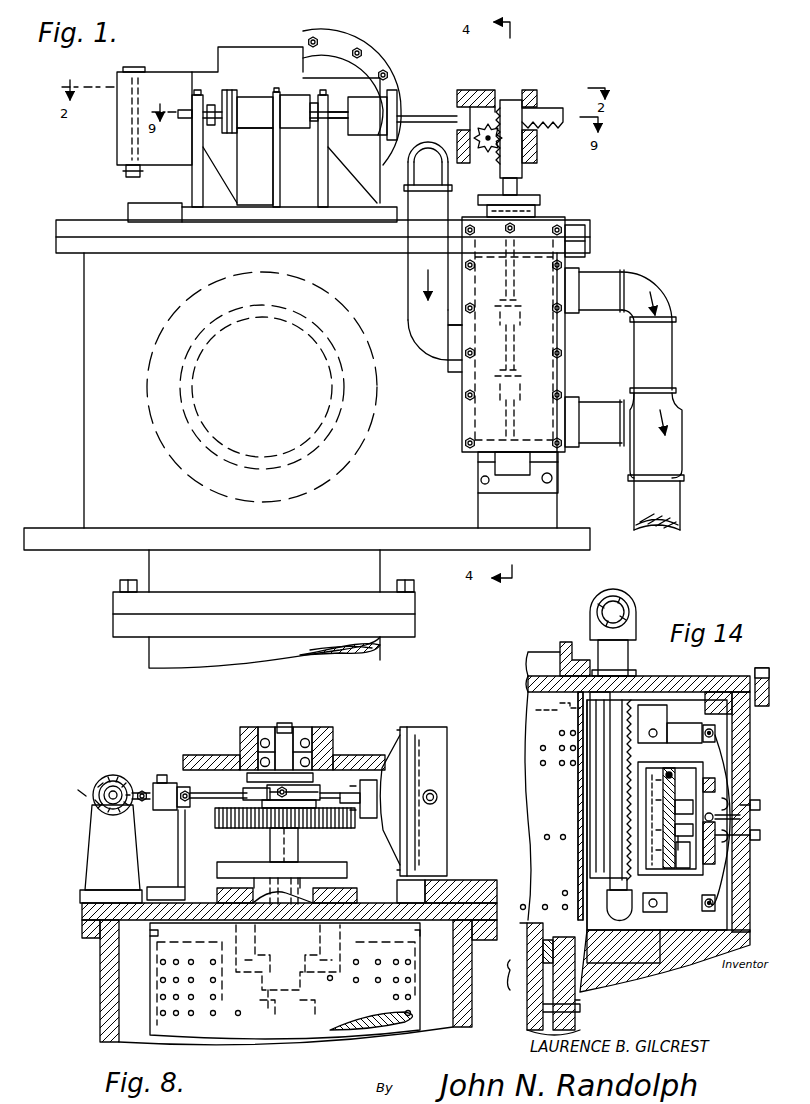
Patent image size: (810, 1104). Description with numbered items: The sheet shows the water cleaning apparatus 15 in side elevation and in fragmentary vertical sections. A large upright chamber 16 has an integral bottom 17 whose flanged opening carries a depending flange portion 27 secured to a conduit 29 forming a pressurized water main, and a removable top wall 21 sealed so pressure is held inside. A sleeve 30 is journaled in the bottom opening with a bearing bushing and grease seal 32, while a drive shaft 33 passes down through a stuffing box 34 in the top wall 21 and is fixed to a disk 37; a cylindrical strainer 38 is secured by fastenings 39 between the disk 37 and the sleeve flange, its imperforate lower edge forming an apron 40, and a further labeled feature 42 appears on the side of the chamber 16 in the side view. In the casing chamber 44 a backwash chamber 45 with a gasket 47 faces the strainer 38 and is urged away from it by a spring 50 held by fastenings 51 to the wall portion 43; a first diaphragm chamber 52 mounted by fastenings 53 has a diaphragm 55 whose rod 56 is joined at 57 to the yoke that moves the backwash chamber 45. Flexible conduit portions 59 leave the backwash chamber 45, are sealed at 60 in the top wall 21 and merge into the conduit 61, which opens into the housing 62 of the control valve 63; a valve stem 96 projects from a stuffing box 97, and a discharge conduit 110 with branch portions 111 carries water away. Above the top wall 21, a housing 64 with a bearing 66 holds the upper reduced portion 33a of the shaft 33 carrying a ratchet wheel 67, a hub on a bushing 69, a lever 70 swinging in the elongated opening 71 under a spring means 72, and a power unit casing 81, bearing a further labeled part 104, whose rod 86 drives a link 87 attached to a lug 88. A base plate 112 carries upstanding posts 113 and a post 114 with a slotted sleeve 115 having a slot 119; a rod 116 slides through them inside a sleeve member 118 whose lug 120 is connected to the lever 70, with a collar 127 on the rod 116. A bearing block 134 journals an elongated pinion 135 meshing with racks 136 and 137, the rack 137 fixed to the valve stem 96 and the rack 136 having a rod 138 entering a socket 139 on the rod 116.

In FIG. 1, the water cleaning apparatus 15 is at (578, 205).
In FIG. 1, the chamber 16 is at (84, 318).
In FIG. 8, the chamber 16 is at (58, 987).
In FIG. 1, the bottom 17 is at (307, 539).
In FIG. 1, the top wall 21 is at (78, 226).
In FIG. 8, the top wall 21 is at (448, 888).
In FIG. 14, the top wall 21 is at (636, 680).
In FIG. 1, the depending flange portion 27 is at (264, 593).
In FIG. 1, the conduit 29 is at (380, 656).
In FIG. 14, the sleeve 30 is at (527, 980).
In FIG. 14, the bearing bushing and grease seal 32 is at (527, 1006).
In FIG. 8, the drive shaft 33 is at (284, 866).
In FIG. 8, the upper reduced portion of shaft 33a is at (274, 740).
In FIG. 8, the stuffing box 34 is at (306, 866).
In FIG. 14, the disk 37 is at (552, 806).
In FIG. 8, the strainer 38 is at (150, 1005).
In FIG. 14, the strainer 38 is at (580, 870).
In FIG. 8, the fastenings 39 is at (152, 935).
In FIG. 14, the apron 40 is at (582, 956).
In FIG. 1, the circular opening 42 is at (196, 408).
In FIG. 14, the wall portion 43 is at (748, 860).
In FIG. 14, the casing chamber 44 is at (740, 708).
In FIG. 14, the backwash chamber 45 is at (605, 807).
In FIG. 14, the gasket 47 is at (600, 850).
In FIG. 14, the spring 50 is at (742, 788).
In FIG. 14, the fastenings 51 is at (755, 838).
In FIG. 14, the first diaphragm chamber 52 is at (655, 775).
In FIG. 14, the fastenings 53 is at (662, 732).
In FIG. 14, the diaphragm 55 is at (678, 798).
In FIG. 14, the rod 56 is at (695, 804).
In FIG. 14, the connection 57 is at (690, 826).
In FIG. 14, the flexible conduit portions 59 is at (608, 780).
In FIG. 14, the seal 60 is at (628, 660).
In FIG. 1, the conduit 61 is at (433, 251).
In FIG. 14, the conduit 61 is at (630, 600).
In FIG. 1, the valve housing 62 is at (478, 415).
In FIG. 1, the control valve 63 is at (452, 383).
In FIG. 1, the housing 64 is at (192, 65).
In FIG. 8, the housing 64 is at (198, 760).
In FIG. 14, the housing 64 is at (575, 656).
In FIG. 8, the bearing 66 is at (322, 745).
In FIG. 8, the ratchet wheel 67 is at (222, 828).
In FIG. 8, the bushing 69 is at (250, 778).
In FIG. 8, the lever 70 is at (215, 792).
In FIG. 8, the elongated opening 71 is at (182, 843).
In FIG. 8, the spring means 72 is at (162, 776).
In FIG. 1, the power unit casing 81 is at (380, 60).
In FIG. 8, the power unit casing 81 is at (447, 808).
In FIG. 8, the rod 86 is at (358, 794).
In FIG. 8, the link 87 is at (325, 806).
In FIG. 8, the lug 88 is at (262, 810).
In FIG. 1, the valve stem 96 is at (524, 183).
In FIG. 1, the stuffing box 97 is at (545, 200).
In FIG. 8, the terminal 104 is at (434, 792).
In FIG. 1, the discharge conduit 110 is at (670, 520).
In FIG. 1, the branch portions 111 is at (624, 399).
In FIG. 1, the base plate 112 is at (283, 218).
In FIG. 1, the upstanding posts 113 is at (193, 157).
In FIG. 8, the upstanding post 114 is at (111, 854).
In FIG. 1, the sleeve 115 is at (272, 170).
In FIG. 8, the sleeve 115 is at (94, 792).
In FIG. 1, the rod 116 is at (336, 105).
In FIG. 8, the rod 116 is at (98, 805).
In FIG. 1, the sleeve member 118 is at (290, 101).
In FIG. 8, the sleeve member 118 is at (102, 778).
In FIG. 8, the slot 119 is at (140, 785).
In FIG. 8, the lug 120 is at (170, 806).
In FIG. 1, the collar 127 is at (210, 123).
In FIG. 1, the bearing block 134 is at (473, 86).
In FIG. 1, the elongated pinion 135 is at (482, 152).
In FIG. 1, the rack 136 is at (542, 104).
In FIG. 1, the rack 137 is at (517, 90).
In FIG. 1, the rod 138 is at (415, 112).
In FIG. 1, the socket 139 is at (367, 116).